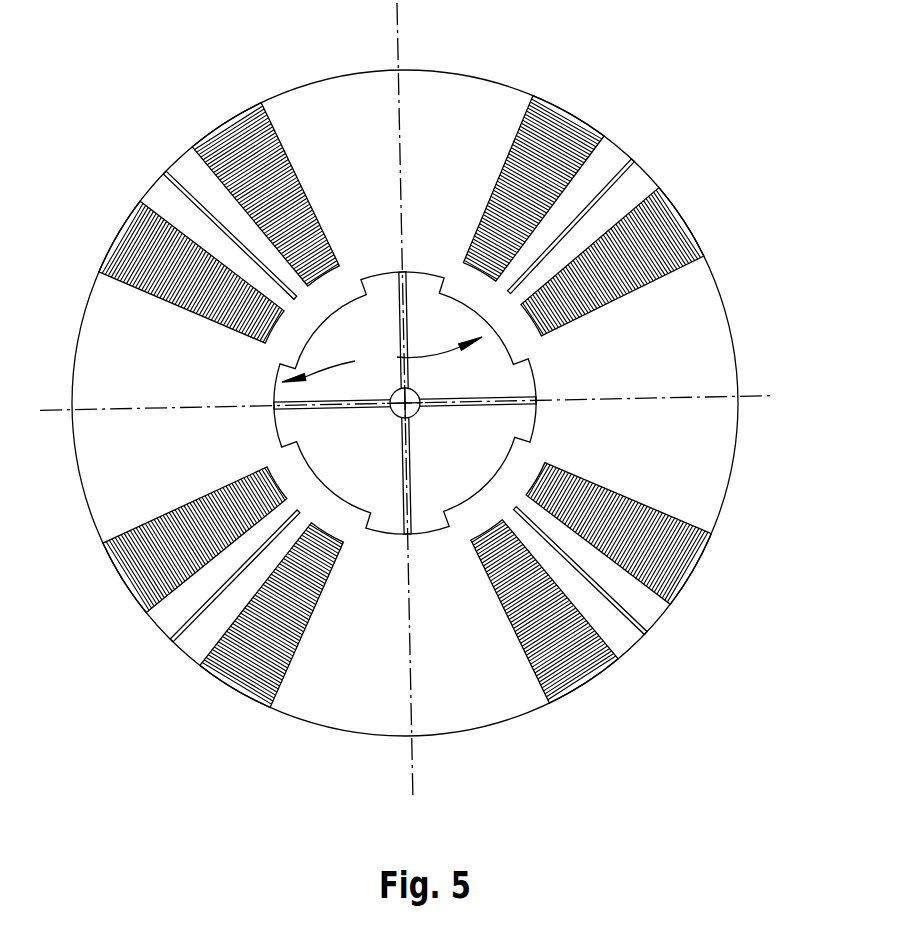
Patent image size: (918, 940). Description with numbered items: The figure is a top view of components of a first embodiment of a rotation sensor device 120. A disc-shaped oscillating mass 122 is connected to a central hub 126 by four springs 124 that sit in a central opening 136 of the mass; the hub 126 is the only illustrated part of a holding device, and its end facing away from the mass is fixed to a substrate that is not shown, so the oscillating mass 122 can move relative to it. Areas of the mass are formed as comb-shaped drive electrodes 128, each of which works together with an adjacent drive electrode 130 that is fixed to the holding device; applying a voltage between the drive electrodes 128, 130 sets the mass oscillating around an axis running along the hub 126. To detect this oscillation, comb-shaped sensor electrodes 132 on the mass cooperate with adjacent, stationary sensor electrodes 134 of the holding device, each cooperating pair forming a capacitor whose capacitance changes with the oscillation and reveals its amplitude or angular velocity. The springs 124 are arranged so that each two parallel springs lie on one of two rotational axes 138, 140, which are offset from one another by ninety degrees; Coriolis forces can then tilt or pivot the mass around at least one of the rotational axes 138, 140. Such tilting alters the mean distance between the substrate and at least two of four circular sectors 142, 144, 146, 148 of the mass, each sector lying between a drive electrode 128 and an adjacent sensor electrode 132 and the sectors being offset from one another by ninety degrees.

The rotation sensor device 120 is at (700, 670).
The oscillating mass 122 is at (742, 467).
The springs 124 is at (412, 444).
The hub 126 is at (394, 413).
The drive electrodes 128 is at (545, 97).
The drive electrodes 130 is at (597, 125).
The sensor electrodes 132 is at (262, 103).
The sensor electrodes 134 is at (205, 140).
The central opening 136 is at (382, 359).
The rotational axis 138 is at (772, 396).
The rotational axis 140 is at (413, 770).
The circular sector 142 is at (622, 378).
The circular sector 144 is at (426, 655).
The circular sector 146 is at (147, 455).
The circular sector 148 is at (339, 180).